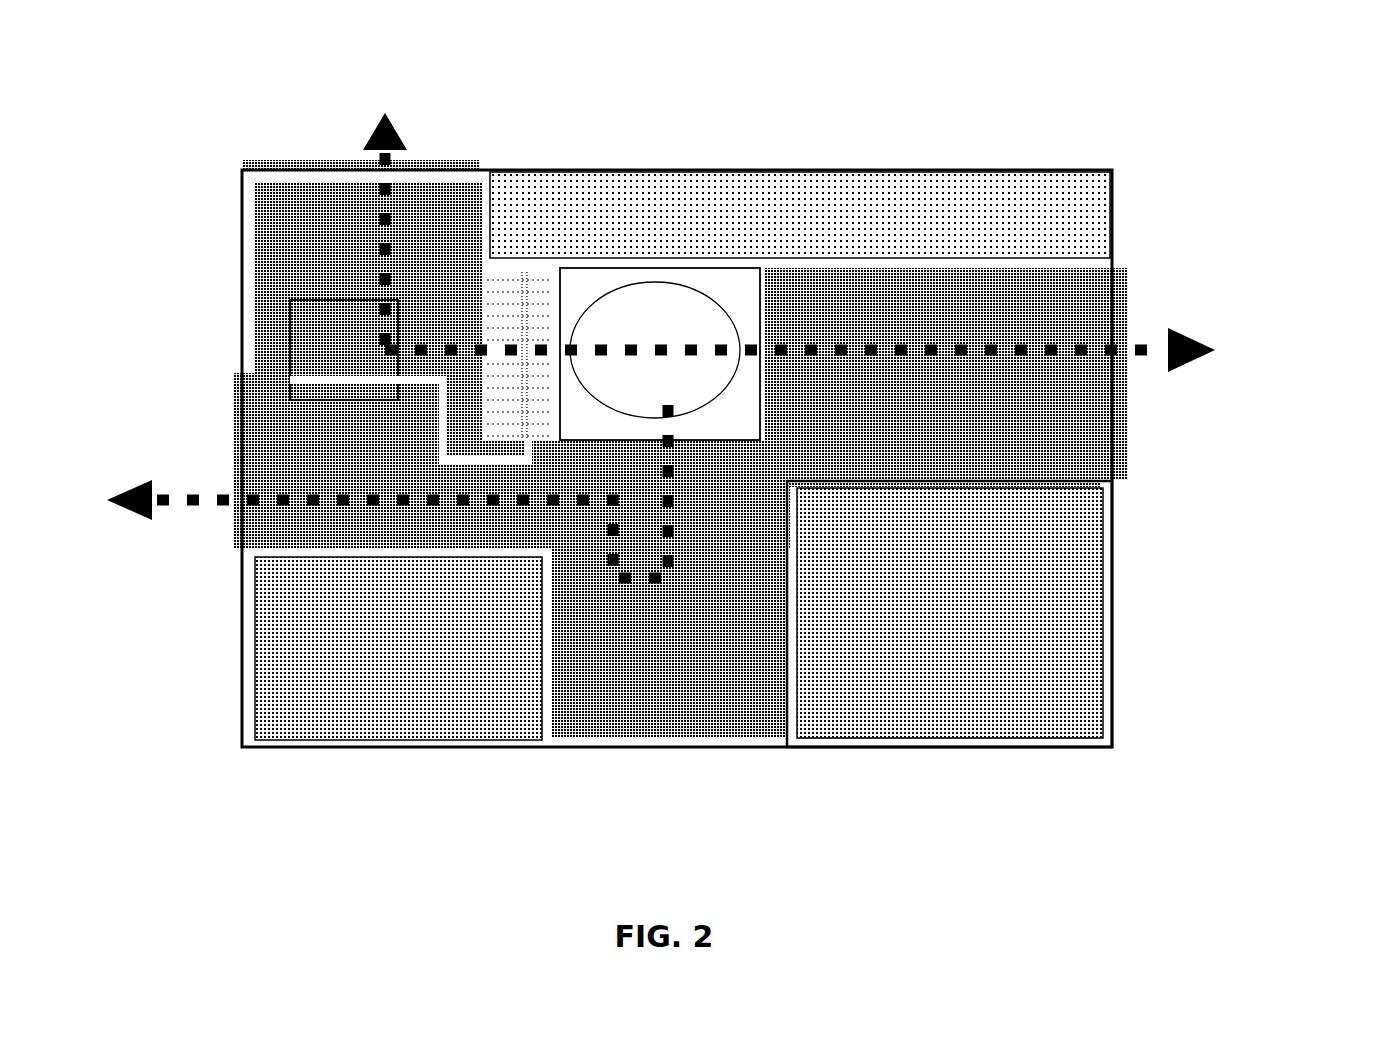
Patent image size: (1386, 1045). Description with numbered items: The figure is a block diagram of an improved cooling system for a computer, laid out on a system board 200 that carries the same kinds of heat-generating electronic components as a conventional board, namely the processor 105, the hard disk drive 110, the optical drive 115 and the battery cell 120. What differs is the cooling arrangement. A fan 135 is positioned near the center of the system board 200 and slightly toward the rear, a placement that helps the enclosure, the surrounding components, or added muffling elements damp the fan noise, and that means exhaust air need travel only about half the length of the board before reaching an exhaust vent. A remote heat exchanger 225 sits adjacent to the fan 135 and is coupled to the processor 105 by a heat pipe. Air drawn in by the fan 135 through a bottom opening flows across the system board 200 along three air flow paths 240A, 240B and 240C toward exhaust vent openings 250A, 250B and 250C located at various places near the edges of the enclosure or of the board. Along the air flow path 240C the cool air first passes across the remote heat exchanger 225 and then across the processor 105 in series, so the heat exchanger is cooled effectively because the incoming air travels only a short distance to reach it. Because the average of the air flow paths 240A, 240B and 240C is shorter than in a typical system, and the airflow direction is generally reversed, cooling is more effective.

The system board 200 is at (1009, 150).
The processor 105 is at (344, 329).
The hard disk drive 110 is at (398, 648).
The optical drive 115 is at (949, 614).
The battery cell 120 is at (800, 215).
The fan 135 is at (660, 354).
The remote heat exchanger 225 is at (542, 265).
The air flow path 240A is at (1148, 370).
The air flow path 240B is at (163, 526).
The air flow path 240C is at (420, 145).
The exhaust vent opening 250A is at (1130, 303).
The exhaust vent opening 250B is at (220, 429).
The exhaust vent opening 250C is at (256, 142).